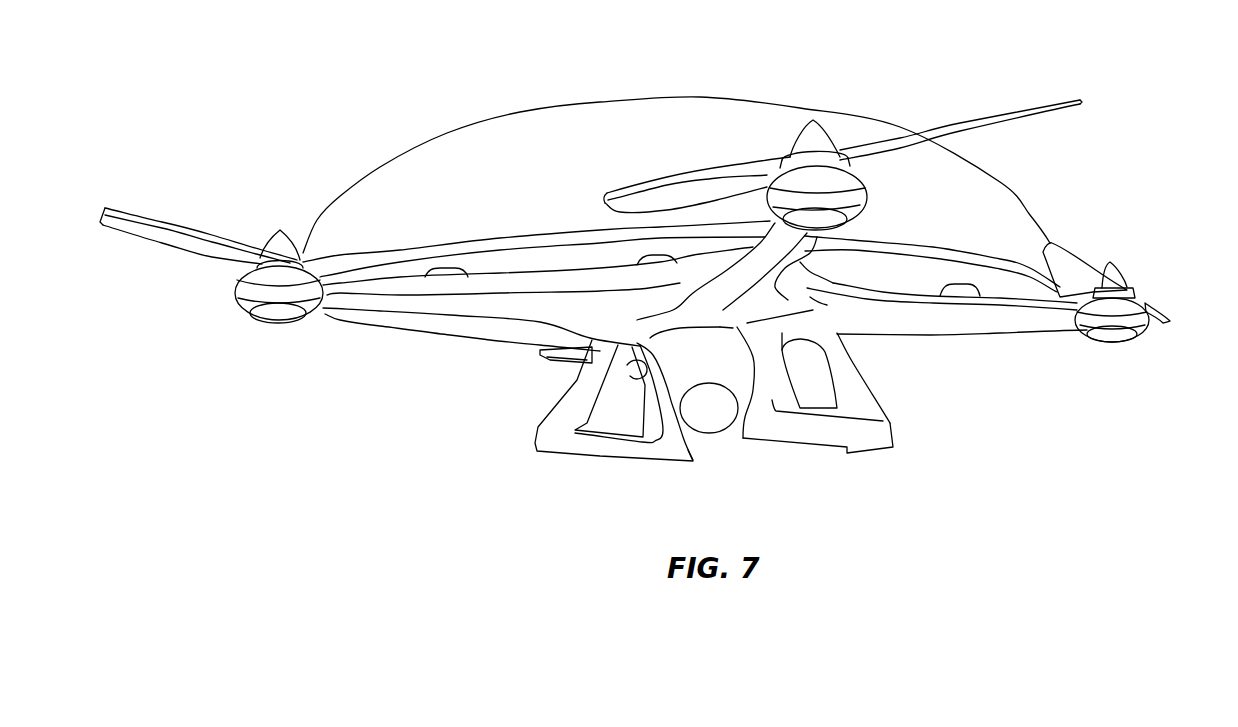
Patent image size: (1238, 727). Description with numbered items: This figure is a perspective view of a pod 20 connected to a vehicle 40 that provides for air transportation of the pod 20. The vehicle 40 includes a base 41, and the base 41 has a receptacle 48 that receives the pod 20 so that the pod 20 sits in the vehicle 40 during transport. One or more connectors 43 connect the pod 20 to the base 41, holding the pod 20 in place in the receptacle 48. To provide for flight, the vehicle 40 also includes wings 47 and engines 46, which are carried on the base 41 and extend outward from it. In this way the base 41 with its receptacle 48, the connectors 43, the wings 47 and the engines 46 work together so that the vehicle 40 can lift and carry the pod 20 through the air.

The pod 20 is at (447, 133).
The vehicle 40 is at (420, 445).
The base 41 is at (490, 296).
The connector 43 is at (447, 270).
The engine 46 is at (237, 293).
The wing 47 is at (403, 298).
The receptacle 48 is at (558, 250).